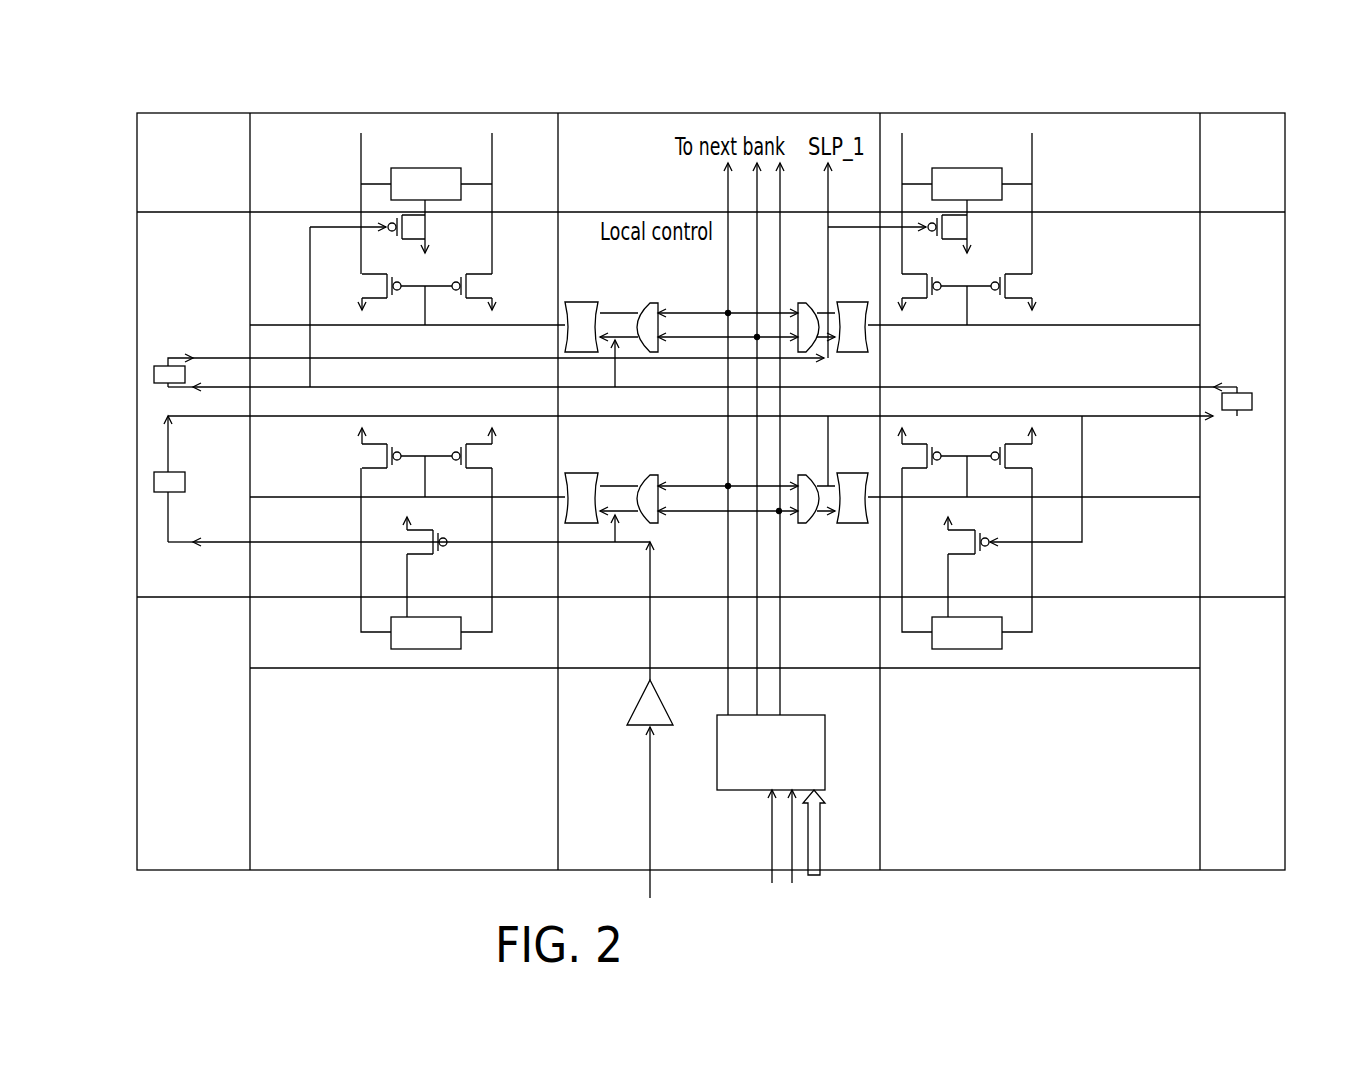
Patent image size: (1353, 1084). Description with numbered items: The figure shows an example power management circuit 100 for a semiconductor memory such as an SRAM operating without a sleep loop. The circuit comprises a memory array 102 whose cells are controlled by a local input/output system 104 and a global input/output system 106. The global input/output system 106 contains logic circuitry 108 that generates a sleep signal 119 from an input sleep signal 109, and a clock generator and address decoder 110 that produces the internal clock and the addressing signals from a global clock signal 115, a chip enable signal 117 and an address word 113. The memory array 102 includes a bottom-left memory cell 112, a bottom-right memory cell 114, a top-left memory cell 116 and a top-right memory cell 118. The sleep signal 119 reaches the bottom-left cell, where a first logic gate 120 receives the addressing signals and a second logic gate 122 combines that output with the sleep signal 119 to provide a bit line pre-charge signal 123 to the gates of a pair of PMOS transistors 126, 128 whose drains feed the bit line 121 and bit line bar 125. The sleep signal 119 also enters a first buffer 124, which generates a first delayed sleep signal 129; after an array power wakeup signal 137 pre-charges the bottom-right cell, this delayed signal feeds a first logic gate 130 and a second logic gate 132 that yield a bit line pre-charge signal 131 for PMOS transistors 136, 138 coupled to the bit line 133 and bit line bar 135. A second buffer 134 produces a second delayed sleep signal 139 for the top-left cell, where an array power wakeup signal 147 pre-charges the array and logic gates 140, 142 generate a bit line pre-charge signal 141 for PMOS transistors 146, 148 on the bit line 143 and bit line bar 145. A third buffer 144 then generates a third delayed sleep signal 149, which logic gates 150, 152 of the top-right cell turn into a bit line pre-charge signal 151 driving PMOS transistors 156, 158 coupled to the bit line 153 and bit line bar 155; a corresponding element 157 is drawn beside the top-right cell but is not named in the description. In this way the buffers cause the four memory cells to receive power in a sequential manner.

The power management circuit 100 is at (105, 100).
The memory array 102 is at (151, 168).
The local input/output (I/O) system 104 is at (1268, 350).
The global I/O system 106 is at (1268, 813).
The logic circuitry 108 is at (638, 703).
The input sleep signal 109 is at (648, 884).
The clock generator and address decoder 110 is at (798, 713).
The first (bottom-left) memory cell 112 is at (425, 650).
The address word 113 is at (823, 857).
The second (bottom-right) memory cell 114 is at (967, 650).
The global clock signal 115 is at (770, 884).
The third (top-left) memory cell 116 is at (412, 167).
The chip enable signal 117 is at (792, 886).
The fourth (top-right) memory cell 118 is at (950, 168).
The sleep signal 119 is at (270, 540).
The first logic (AND) gate 120 is at (648, 475).
The bit line 121 is at (377, 633).
The second logic (OR) gate 122 is at (588, 472).
The bit line pre-charge signal 123 is at (525, 495).
The first buffer 124 is at (192, 457).
The bit line bar 125 is at (497, 628).
The PMOS transistor 126 is at (492, 452).
The PMOS transistor 128 is at (362, 456).
The first delayed sleep signal 129 is at (418, 528).
The first logic (AND) gate 130 is at (805, 475).
The bit line pre-charge signal 131 is at (1115, 545).
The second logic (OR) gate 132 is at (855, 473).
The bit line 133 is at (917, 634).
The second buffer 134 is at (1245, 370).
The bit line bar 135 is at (1035, 633).
The PMOS transistor 136 is at (1036, 460).
The array power wakeup signal 137 is at (955, 525).
The PMOS transistor 138 is at (915, 440).
The second delayed sleep signal 139 is at (1028, 390).
The first logic (AND) gate 140 is at (648, 303).
The bit line pre-charge signal 141 is at (277, 322).
The second logic (OR) gate 142 is at (588, 300).
The bit line 143 is at (363, 148).
The third buffer 144 is at (168, 357).
The bit line bar 145 is at (495, 150).
The PMOS transistor 146 is at (492, 292).
The array power wakeup signal 147 is at (420, 232).
The PMOS transistor 148 is at (362, 286).
The third delayed sleep signal 149 is at (378, 390).
The first logic (AND) gate 150 is at (805, 303).
The bit line pre-charge signal 151 is at (1160, 322).
The second logic (OR) gate 152 is at (855, 302).
The bit line 153 is at (905, 150).
The bit line bar 155 is at (1035, 150).
The PMOS transistor 156 is at (1032, 292).
The sleep transistor 157 is at (960, 232).
The PMOS transistor 158 is at (905, 300).